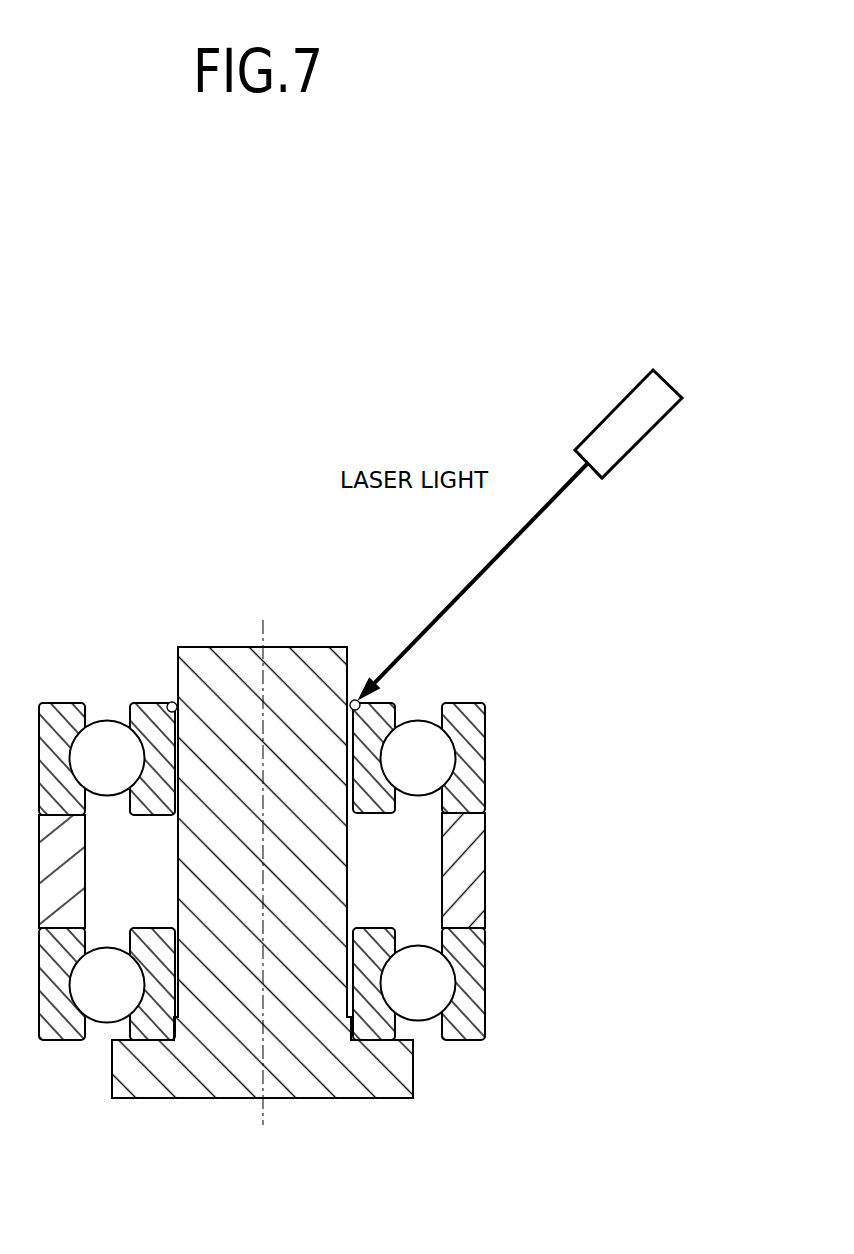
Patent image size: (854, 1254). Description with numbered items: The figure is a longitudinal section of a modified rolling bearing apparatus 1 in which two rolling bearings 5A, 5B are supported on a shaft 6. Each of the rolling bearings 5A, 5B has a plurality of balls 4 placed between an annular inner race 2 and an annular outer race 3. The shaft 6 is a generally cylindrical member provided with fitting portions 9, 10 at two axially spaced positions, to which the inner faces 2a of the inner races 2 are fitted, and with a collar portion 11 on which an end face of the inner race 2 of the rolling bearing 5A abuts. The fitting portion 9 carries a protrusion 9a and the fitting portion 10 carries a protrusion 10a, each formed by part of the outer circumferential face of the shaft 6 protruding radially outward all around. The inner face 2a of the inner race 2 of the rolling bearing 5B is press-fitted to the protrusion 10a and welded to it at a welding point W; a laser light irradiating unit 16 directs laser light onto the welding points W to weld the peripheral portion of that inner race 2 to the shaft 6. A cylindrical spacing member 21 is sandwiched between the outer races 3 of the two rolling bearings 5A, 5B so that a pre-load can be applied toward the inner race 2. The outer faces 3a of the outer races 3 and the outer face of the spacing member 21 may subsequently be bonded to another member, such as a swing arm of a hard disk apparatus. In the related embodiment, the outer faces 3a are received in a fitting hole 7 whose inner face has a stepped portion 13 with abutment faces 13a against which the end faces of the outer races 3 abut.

The rolling bearing apparatus 1 is at (317, 827).
The inner race 2 is at (375, 815).
The inner face of the inner race 2a is at (353, 713).
The outer race 3 is at (462, 1043).
The outer face of the outer race 3a is at (488, 722).
The balls 4 is at (418, 718).
The rolling bearing 5A is at (437, 1063).
The rolling bearing 5B is at (449, 680).
The shaft 6 is at (355, 698).
The fitting hole 7 is at (66, 671).
The fitting portion 9 is at (212, 991).
The protrusion 9a is at (168, 1043).
The fitting portion 10 is at (328, 761).
The protrusion 10a is at (165, 712).
The collar portion 11 is at (107, 1043).
The stepped portion 13 is at (442, 870).
The abutment faces 13a is at (470, 800).
The laser light irradiating unit 16 is at (573, 425).
The spacing member 21 is at (488, 860).
The welding point W is at (171, 700).